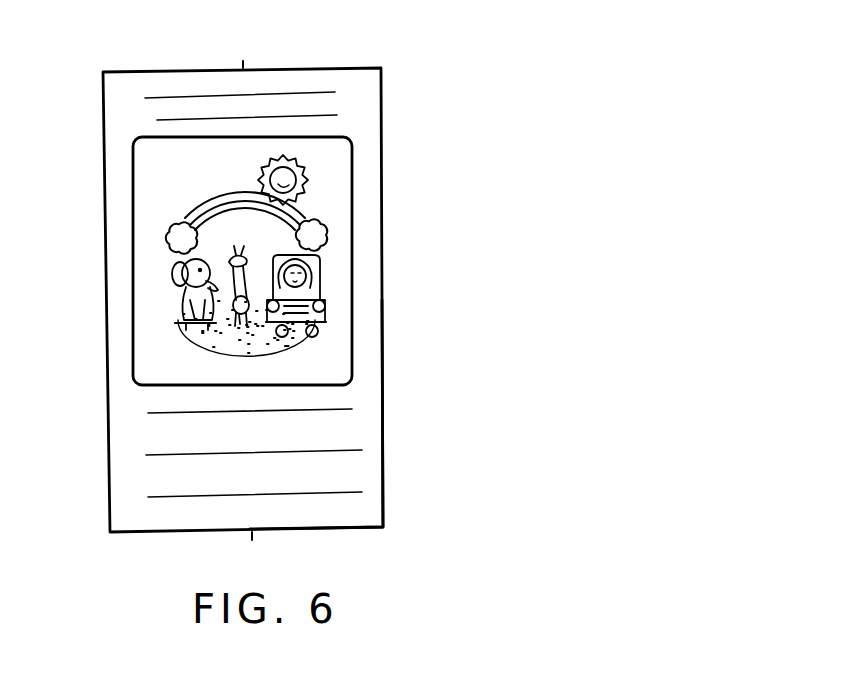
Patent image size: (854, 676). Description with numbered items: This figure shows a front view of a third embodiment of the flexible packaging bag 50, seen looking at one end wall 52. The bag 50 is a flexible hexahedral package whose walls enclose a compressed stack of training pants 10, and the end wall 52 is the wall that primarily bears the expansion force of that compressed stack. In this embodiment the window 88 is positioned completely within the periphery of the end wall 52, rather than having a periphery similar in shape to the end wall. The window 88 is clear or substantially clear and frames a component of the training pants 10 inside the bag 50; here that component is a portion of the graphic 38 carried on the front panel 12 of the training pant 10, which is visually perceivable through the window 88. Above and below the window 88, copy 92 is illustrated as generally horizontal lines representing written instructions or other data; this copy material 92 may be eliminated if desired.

The flexible packaging bag 50 is at (478, 56).
The end wall 52 is at (363, 397).
The copy 92 is at (190, 97).
The window 88 is at (138, 213).
The training pants 10 is at (328, 197).
The front panel 12 is at (340, 264).
The graphic 38 is at (130, 299).